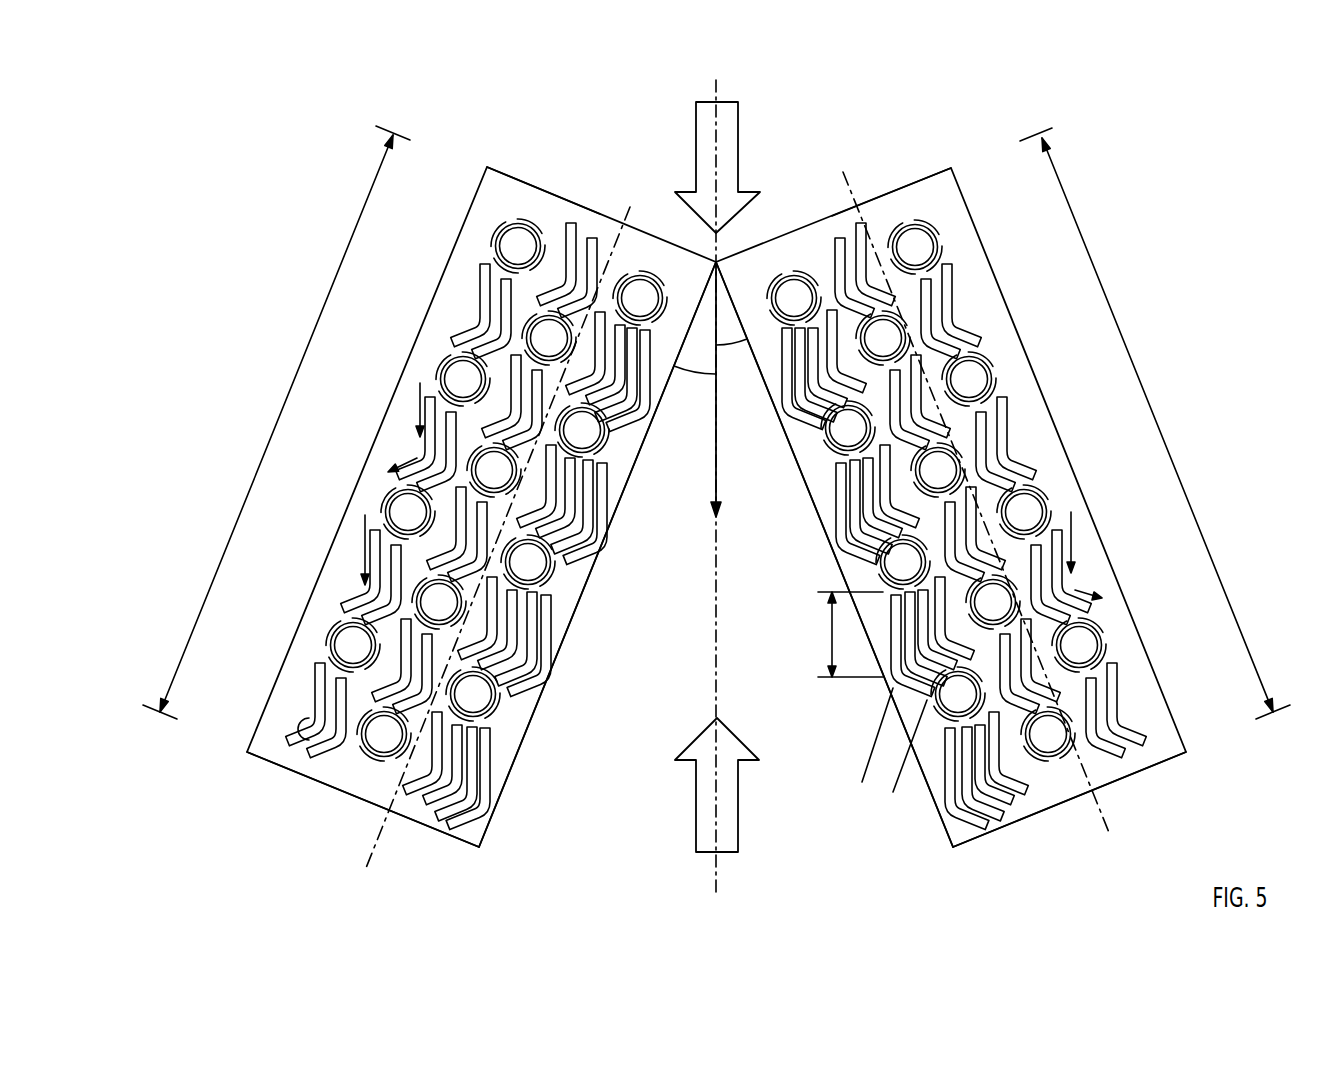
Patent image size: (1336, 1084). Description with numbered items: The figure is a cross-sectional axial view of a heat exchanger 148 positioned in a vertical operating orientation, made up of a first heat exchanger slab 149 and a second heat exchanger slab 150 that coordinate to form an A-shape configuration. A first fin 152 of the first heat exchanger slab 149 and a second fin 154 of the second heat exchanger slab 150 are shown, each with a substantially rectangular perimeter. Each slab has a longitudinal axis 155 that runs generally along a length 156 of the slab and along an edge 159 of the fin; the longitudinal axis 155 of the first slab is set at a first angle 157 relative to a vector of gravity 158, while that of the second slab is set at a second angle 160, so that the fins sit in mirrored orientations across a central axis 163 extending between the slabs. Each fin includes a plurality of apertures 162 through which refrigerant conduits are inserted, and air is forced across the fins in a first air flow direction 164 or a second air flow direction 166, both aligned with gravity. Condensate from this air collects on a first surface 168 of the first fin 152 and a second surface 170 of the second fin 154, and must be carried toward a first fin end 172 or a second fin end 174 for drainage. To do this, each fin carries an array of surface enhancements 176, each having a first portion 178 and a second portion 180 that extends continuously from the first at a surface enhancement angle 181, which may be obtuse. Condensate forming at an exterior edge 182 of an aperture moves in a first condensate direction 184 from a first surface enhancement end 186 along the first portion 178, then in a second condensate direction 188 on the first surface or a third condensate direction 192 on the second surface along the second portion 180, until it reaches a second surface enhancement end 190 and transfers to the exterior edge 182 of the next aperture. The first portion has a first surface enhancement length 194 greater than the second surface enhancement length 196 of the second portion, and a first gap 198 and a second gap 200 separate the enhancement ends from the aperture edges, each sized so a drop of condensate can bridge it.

The heat exchanger 148 is at (1143, 191).
The first heat exchanger slab 149 is at (228, 765).
The second heat exchanger slab 150 is at (1192, 772).
The first fin 152 is at (460, 217).
The second fin 154 is at (998, 282).
The longitudinal axis 155 is at (373, 837).
The length 156 is at (716, 422).
The first angle 157 is at (700, 374).
The vector of gravity 158 is at (718, 468).
The edge 159 is at (510, 770).
The second angle 160 is at (736, 342).
The aperture 162 is at (517, 243).
The central axis 163 is at (712, 578).
The first air flow direction 164 is at (705, 132).
The second air flow direction 166 is at (705, 802).
The first surface 168 is at (492, 200).
The second surface 170 is at (940, 197).
The first fin end 172 is at (335, 798).
The second fin end 174 is at (1012, 832).
The surface enhancement 176 is at (358, 590).
The first portion 178 is at (312, 680).
The second portion 180 is at (283, 750).
The surface enhancement angle 181 is at (293, 720).
The exterior edge 182 is at (465, 360).
The first condensate direction 184 is at (418, 395).
The first surface enhancement end 186 is at (440, 392).
The second condensate direction 188 is at (410, 450).
The second surface enhancement end 190 is at (403, 487).
The third condensate direction 192 is at (1075, 590).
The first surface enhancement length 194 is at (830, 636).
The second surface enhancement length 196 is at (928, 790).
The first gap 198 is at (443, 403).
The second gap 200 is at (405, 492).